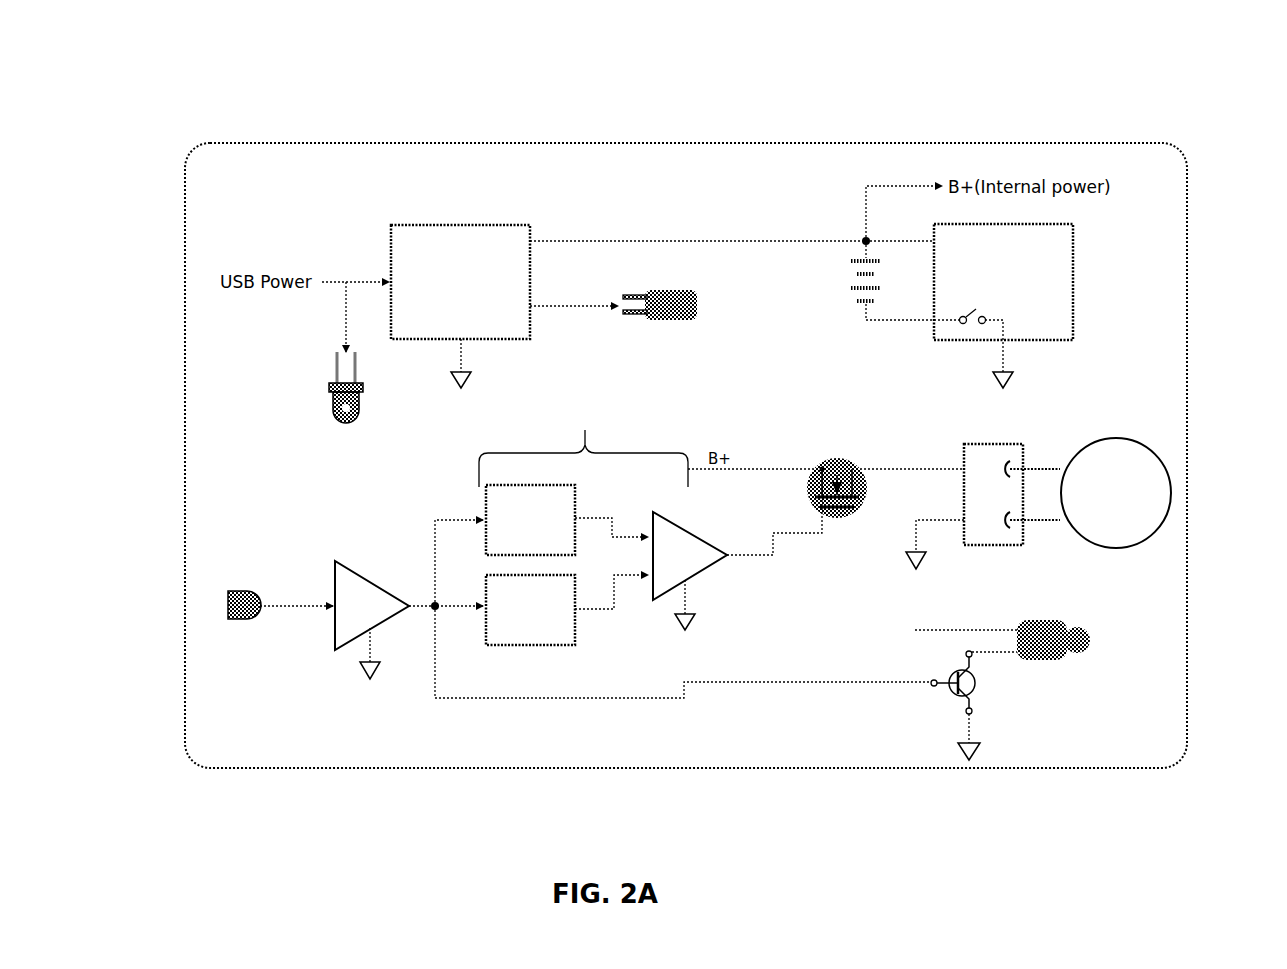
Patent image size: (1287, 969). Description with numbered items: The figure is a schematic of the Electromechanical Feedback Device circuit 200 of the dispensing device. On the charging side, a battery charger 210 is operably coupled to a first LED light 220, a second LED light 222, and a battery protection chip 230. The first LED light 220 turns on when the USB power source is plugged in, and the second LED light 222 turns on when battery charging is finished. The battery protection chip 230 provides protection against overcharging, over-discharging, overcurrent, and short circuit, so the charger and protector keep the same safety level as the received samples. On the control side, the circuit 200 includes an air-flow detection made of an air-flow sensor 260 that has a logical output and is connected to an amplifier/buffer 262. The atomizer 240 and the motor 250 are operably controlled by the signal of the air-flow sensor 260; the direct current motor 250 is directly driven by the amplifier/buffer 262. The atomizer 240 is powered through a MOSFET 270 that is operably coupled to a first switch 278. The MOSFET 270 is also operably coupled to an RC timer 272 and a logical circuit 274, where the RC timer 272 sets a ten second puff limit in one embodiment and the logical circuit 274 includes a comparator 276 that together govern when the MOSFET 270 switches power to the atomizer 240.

The Electromechanical Feedback Device circuit 200 is at (141, 133).
The battery charger 210 is at (512, 225).
The first LED light 220 is at (340, 427).
The second LED light 222 is at (695, 292).
The battery protection chip 230 is at (1073, 254).
The atomizer 240 is at (1118, 440).
The motor 250 is at (1093, 632).
The air-flow sensor 260 is at (230, 597).
The amplifier/buffer 262 is at (345, 585).
The MOSFET 270 is at (833, 460).
The RC timer 272 is at (541, 648).
The logical circuit 274 is at (582, 578).
The comparator 276 is at (653, 600).
The first switch 278 is at (968, 478).